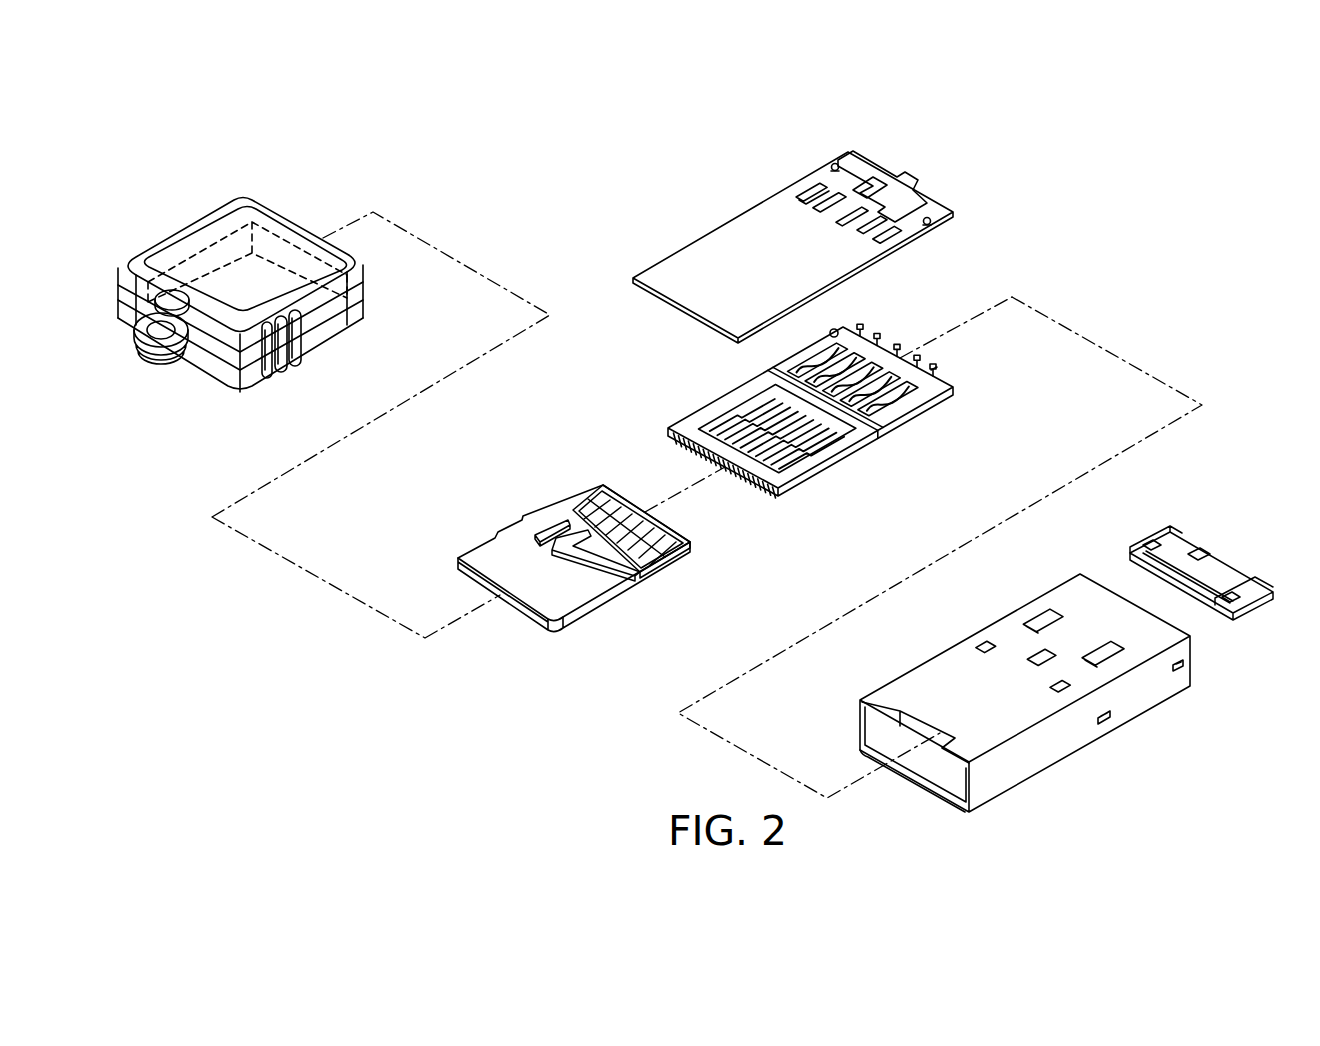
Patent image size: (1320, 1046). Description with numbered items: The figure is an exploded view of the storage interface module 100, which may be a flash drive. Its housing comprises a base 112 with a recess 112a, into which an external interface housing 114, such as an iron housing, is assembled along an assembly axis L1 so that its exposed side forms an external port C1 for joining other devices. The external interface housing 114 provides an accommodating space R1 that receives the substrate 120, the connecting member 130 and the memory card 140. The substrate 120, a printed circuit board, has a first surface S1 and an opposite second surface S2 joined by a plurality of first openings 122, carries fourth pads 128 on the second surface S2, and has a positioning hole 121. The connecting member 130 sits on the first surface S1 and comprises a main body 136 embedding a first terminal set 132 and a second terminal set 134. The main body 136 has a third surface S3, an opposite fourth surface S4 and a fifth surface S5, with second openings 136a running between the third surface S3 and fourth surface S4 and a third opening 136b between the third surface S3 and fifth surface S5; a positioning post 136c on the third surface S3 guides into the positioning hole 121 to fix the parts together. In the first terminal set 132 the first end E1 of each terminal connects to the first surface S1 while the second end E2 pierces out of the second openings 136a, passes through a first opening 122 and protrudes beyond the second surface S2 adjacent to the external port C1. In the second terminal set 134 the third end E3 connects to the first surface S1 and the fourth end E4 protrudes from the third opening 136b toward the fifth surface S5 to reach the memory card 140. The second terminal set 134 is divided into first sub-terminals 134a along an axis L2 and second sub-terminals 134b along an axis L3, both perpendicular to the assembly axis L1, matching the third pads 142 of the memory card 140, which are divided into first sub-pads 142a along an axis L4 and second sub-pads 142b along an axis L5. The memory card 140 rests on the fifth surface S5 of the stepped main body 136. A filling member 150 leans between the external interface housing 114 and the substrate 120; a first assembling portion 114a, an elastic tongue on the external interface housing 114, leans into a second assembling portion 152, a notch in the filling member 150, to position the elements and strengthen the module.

The storage interface module 100 is at (1233, 849).
The base 112 is at (306, 351).
The recess 112a is at (210, 242).
The external interface housing 114 is at (1092, 737).
The first assembling portion 114a is at (1040, 657).
The substrate 120 is at (692, 257).
The positioning hole 121 is at (833, 163).
The first openings 122 is at (806, 194).
The fourth pads 128 is at (855, 172).
The connecting member 130 is at (872, 342).
The first terminal set 132 is at (908, 398).
The second terminal set 134 is at (897, 522).
The first sub-terminals 134a is at (850, 452).
The second sub-terminals 134b is at (799, 457).
The main body 136 is at (893, 430).
The second openings 136a is at (922, 380).
The third opening 136b is at (735, 412).
The positioning post 136c is at (947, 388).
The memory card 140 is at (586, 610).
The third pads 142 is at (565, 420).
The first sub-pads 142a is at (583, 507).
The second sub-pads 142b is at (537, 540).
The filling member 150 is at (1147, 538).
The second assembling portion 152 is at (1204, 553).
The first surface S1 is at (650, 295).
The second surface S2 is at (648, 273).
The third surface S3 is at (680, 430).
The fourth surface S4 is at (910, 434).
The fifth surface S5 is at (773, 496).
The first end E1 is at (859, 329).
The second end E2 is at (908, 390).
The third end E3 is at (668, 442).
The fourth end E4 is at (768, 398).
The assembly axis L1 is at (1104, 240).
The axis of the first sub-terminals L2 is at (748, 386).
The axis of the second sub-terminals L3 is at (703, 412).
The axis of the first sub-pads L4 is at (642, 558).
The axis of the second sub-pads L5 is at (637, 580).
The accommodating space R1 is at (958, 778).
The external port C1 is at (1190, 664).